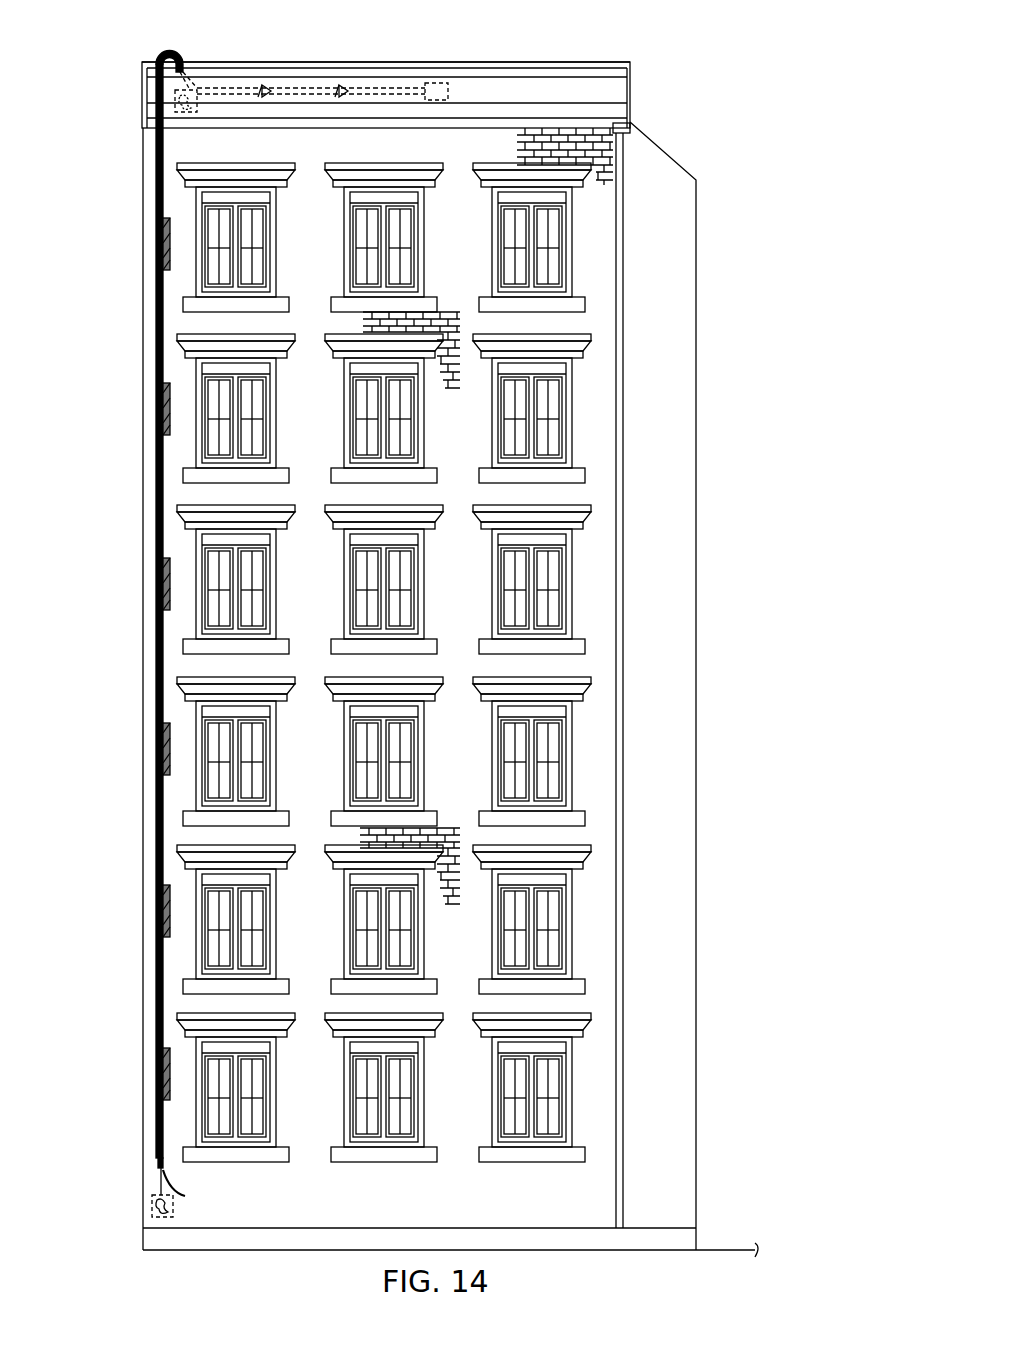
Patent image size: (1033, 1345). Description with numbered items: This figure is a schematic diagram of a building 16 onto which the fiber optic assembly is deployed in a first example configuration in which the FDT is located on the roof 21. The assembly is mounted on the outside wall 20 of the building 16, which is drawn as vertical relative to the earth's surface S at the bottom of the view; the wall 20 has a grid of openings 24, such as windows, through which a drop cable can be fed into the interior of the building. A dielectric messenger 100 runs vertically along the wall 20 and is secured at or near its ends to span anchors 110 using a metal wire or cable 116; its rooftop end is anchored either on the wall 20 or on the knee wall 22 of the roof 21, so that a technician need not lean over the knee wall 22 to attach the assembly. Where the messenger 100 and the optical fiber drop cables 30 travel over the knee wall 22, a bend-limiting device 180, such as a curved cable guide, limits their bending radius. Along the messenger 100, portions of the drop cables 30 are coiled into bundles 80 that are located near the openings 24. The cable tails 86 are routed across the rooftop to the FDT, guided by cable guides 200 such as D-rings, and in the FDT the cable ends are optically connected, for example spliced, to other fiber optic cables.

The building 16 is at (714, 345).
The outside wall 20 is at (605, 286).
The roof 21 is at (438, 55).
The knee wall 22 is at (641, 92).
The openings 24 is at (279, 245).
The optical fiber drop cables 30 is at (314, 84).
The bundle 80 is at (163, 222).
The cable tails 86 is at (245, 80).
The dielectric messenger 100 is at (158, 1162).
The span anchor 110 is at (178, 98).
The metal wire/cable 116 is at (185, 1196).
The bend-limiting device 180 is at (170, 50).
The cable guides 200 is at (270, 82).
The element FDT is at (440, 82).
The earth's surface S is at (713, 1248).